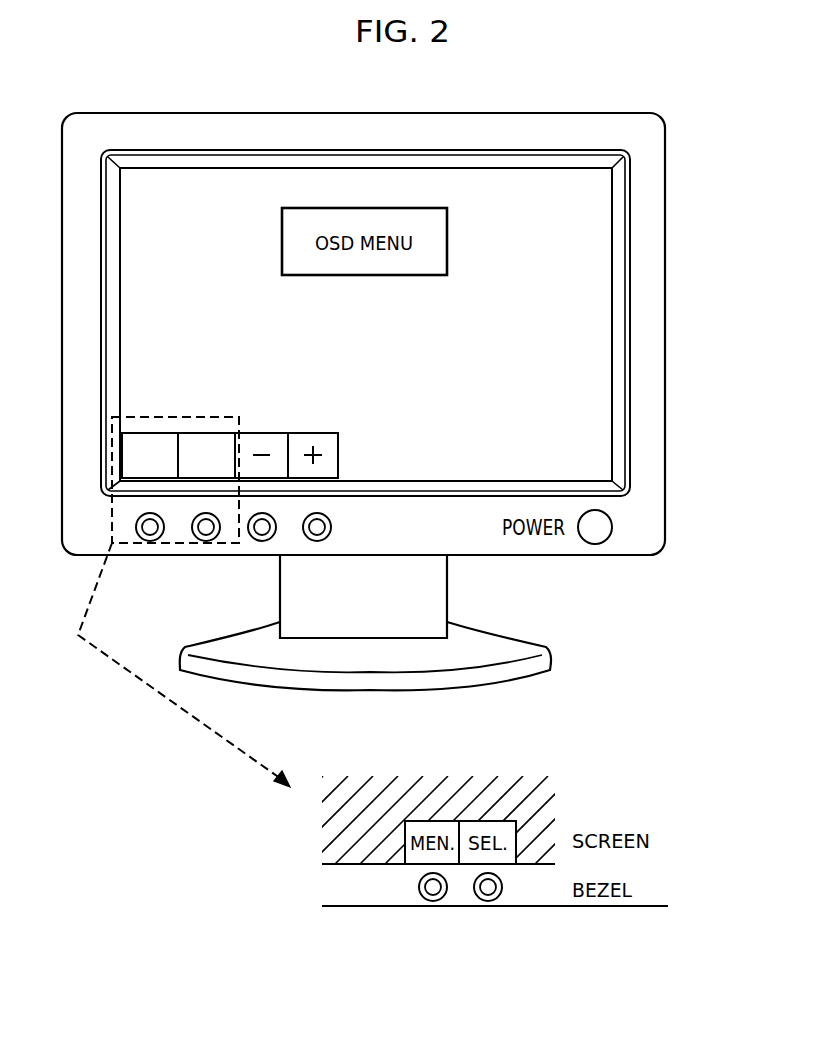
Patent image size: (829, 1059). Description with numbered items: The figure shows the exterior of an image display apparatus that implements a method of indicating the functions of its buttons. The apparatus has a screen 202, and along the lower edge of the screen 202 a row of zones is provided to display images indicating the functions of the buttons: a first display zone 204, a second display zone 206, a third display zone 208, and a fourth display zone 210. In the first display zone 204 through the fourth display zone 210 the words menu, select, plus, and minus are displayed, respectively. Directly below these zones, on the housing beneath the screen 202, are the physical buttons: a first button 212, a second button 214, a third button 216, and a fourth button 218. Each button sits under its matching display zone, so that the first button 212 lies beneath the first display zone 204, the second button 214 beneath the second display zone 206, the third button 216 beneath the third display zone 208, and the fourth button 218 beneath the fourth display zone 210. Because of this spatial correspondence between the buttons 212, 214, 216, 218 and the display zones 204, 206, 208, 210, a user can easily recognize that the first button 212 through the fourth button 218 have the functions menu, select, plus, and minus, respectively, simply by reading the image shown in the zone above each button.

The screen 202 is at (592, 316).
The first display zone 204 is at (151, 433).
The second display zone 206 is at (206, 433).
The third display zone 208 is at (262, 433).
The fourth display zone 210 is at (313, 433).
The first button 212 is at (150, 541).
The second button 214 is at (206, 541).
The third button 216 is at (262, 541).
The fourth button 218 is at (317, 541).